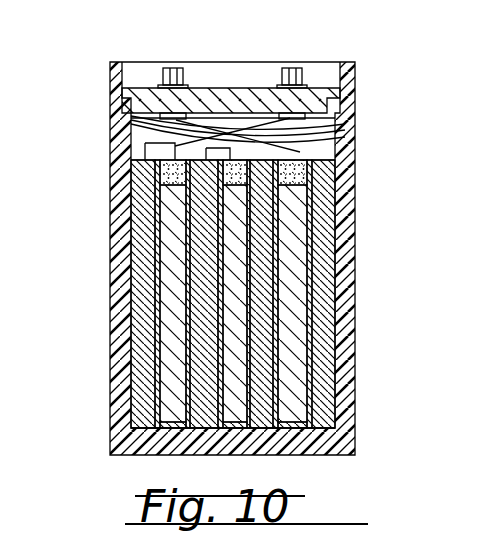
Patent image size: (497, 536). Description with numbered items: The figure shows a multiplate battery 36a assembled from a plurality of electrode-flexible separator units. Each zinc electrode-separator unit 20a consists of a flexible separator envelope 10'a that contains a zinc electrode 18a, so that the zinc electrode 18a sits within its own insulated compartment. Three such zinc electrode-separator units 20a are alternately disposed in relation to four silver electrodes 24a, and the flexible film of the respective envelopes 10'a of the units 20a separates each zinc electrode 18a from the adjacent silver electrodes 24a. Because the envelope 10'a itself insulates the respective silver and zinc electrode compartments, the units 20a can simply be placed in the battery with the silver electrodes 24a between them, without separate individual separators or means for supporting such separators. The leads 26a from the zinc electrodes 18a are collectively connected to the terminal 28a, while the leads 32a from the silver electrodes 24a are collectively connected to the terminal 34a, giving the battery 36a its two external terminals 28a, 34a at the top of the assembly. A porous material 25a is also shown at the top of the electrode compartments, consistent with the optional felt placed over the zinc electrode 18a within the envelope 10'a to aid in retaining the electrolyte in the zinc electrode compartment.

The flexible separator envelope 10'a is at (241, 294).
The zinc electrode 18a is at (233, 393).
The zinc electrode-separator unit 20a is at (214, 356).
The silver electrode 24a is at (200, 295).
The porous top layer 25a is at (296, 180).
The leads from the zinc electrodes 26a is at (131, 124).
The terminal 28a is at (196, 48).
The leads from the silver electrodes 32a is at (345, 121).
The terminal 34a is at (312, 48).
The multiplate battery 36a is at (361, 170).